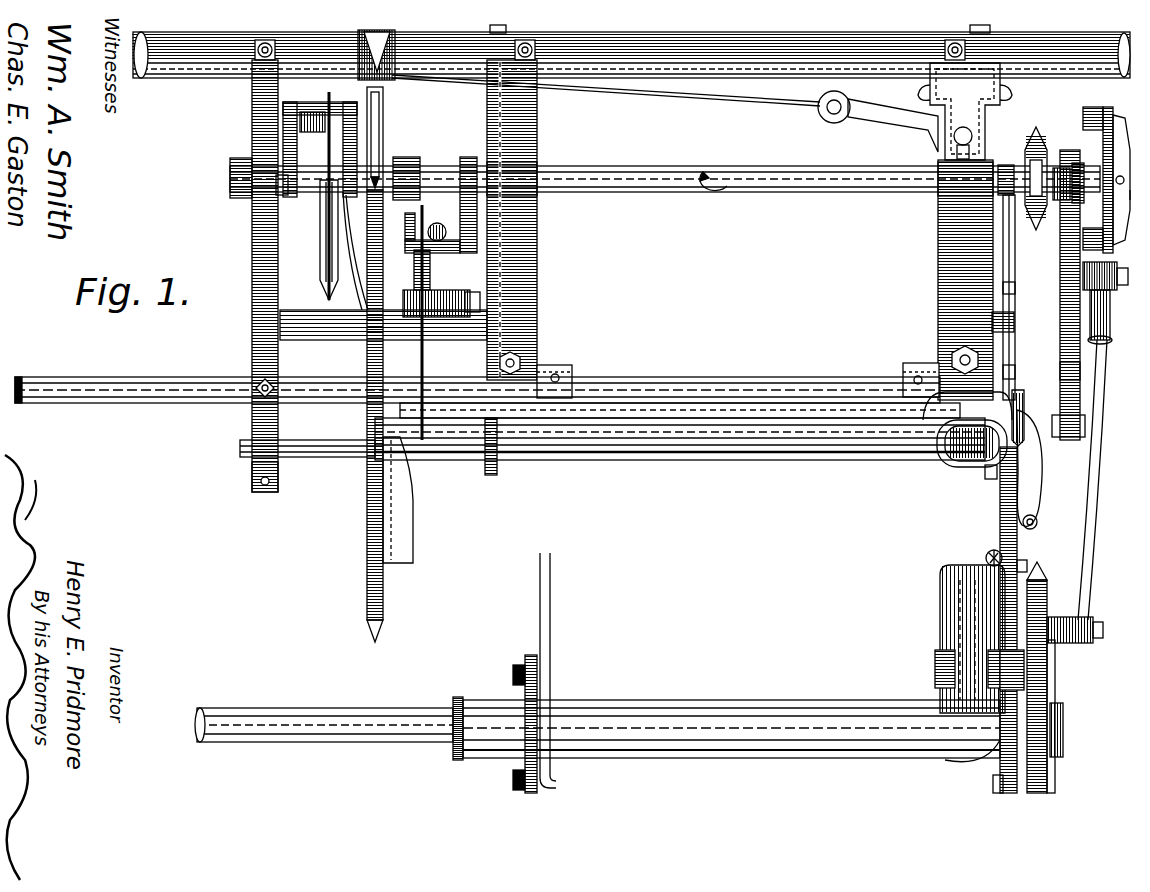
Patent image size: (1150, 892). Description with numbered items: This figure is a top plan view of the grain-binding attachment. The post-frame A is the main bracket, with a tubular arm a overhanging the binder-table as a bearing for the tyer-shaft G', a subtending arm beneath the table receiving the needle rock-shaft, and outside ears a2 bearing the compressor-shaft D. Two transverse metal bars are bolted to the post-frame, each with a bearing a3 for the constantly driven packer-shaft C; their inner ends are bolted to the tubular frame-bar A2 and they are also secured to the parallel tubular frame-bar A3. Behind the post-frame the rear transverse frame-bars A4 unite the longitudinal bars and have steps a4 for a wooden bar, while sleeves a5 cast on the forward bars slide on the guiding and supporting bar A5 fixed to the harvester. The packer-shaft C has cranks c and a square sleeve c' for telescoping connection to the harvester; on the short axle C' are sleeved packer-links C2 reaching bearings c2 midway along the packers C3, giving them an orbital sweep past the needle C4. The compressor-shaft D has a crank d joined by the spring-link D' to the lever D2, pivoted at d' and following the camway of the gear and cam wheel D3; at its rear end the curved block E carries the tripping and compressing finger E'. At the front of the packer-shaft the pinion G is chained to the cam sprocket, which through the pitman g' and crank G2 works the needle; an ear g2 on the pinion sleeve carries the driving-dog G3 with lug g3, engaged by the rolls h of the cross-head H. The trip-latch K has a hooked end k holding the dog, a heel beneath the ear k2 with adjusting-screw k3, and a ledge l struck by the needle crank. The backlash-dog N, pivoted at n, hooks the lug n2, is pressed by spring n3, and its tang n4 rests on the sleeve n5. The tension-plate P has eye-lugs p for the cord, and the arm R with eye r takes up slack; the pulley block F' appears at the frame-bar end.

The post-frame A is at (945, 466).
The tubular frame-bar A2 is at (631, 55).
The second tubular frame-bar A3 is at (840, 377).
The rear transverse metal frame-bars A4 is at (265, 276).
The tubular guiding and supporting bar A5 is at (1092, 55).
The tubular arm or sleeve a is at (731, 731).
The ears or lugs a2 is at (990, 480).
The bearing a3 is at (740, 179).
The steps a4 is at (280, 478).
The sleeves a5 is at (506, 29).
The packer-shaft C is at (665, 170).
The short axle C' is at (383, 314).
The packer-links C2 is at (350, 250).
The packers C3 is at (441, 278).
The binder arm or needle C4 is at (384, 141).
The cranks c is at (380, 170).
The square sleeve c' is at (229, 173).
The bearings c2 is at (472, 298).
The compressor-shaft D is at (612, 456).
The spring-link D' is at (975, 550).
The lever D2 is at (993, 778).
The gear and cam wheel D3 is at (1045, 677).
The crank d is at (999, 620).
The pivot d' is at (1012, 656).
The curved block E is at (411, 500).
The tripping and compressing finger E' is at (396, 416).
The pulley block F' is at (386, 42).
The sprocket wheel or pinion G is at (1025, 178).
The tyer-shaft G' is at (329, 728).
The crank G2 is at (1113, 265).
The driving-dog G3 is at (1078, 162).
The pitman-connection g' is at (1077, 491).
The ear g2 is at (1061, 168).
The lug g3 is at (1129, 198).
The cross-head H is at (1120, 145).
The anti-friction roll h is at (1093, 169).
The trip-latch K is at (1062, 332).
The hooked end k is at (1032, 468).
The ear k2 is at (1032, 556).
The adjusting-screw k3 is at (1037, 524).
The ledge or offset l is at (1070, 371).
The backlash-dog N is at (1015, 265).
The pivot and upstanding hook n is at (1015, 290).
The lug n2 is at (1012, 196).
The spring n3 is at (1014, 325).
The tang n4 is at (1014, 372).
The sleeve n5 is at (1026, 392).
The tension-plate P is at (965, 111).
The depending eye-lugs p is at (963, 122).
The short arm or lever R is at (884, 113).
The eye r is at (818, 114).